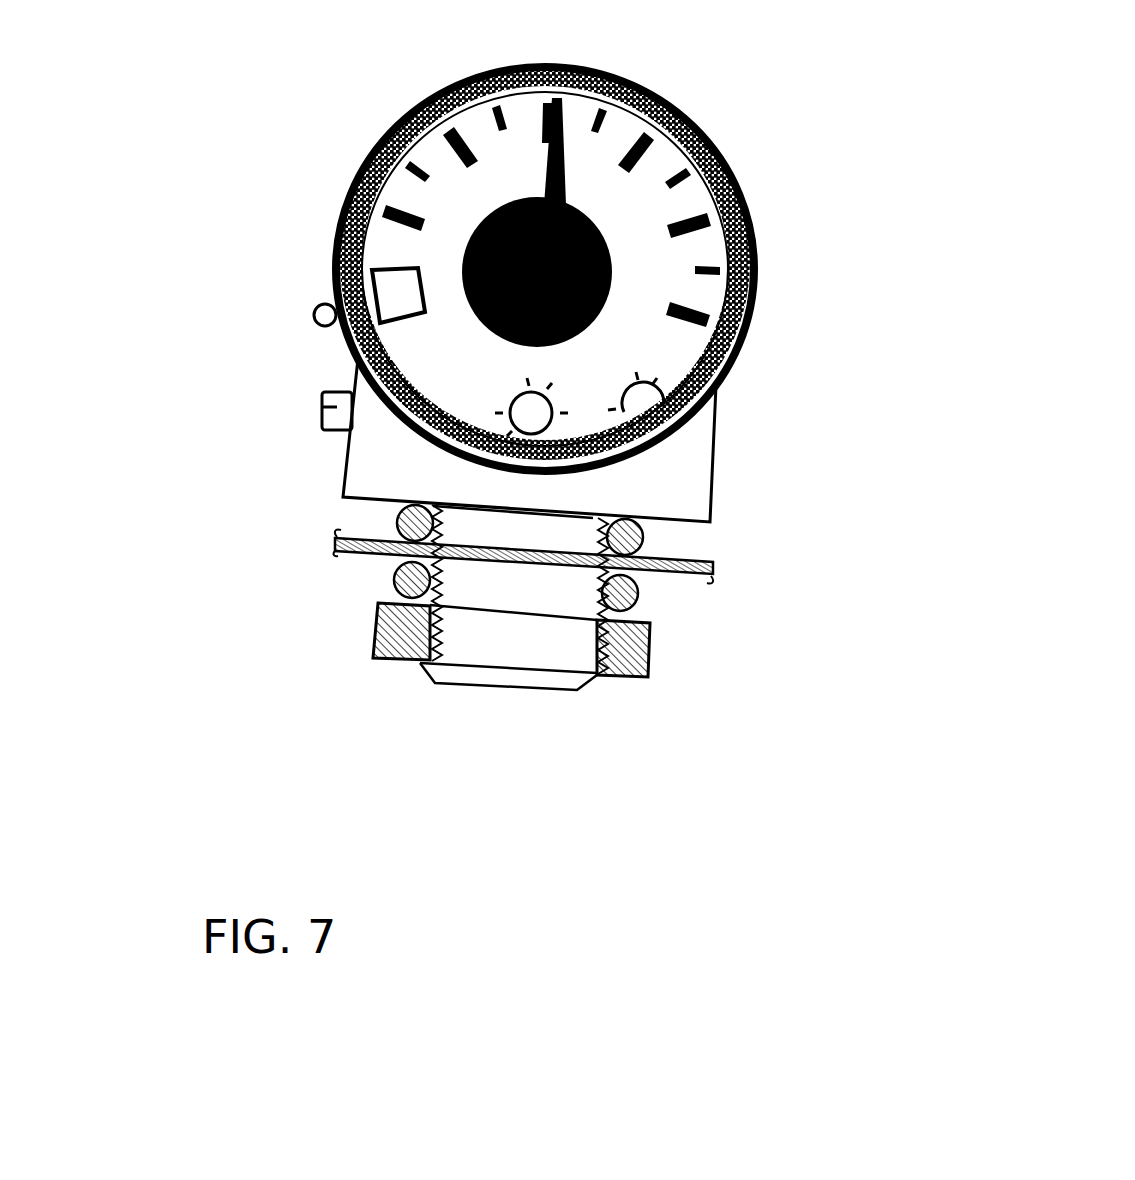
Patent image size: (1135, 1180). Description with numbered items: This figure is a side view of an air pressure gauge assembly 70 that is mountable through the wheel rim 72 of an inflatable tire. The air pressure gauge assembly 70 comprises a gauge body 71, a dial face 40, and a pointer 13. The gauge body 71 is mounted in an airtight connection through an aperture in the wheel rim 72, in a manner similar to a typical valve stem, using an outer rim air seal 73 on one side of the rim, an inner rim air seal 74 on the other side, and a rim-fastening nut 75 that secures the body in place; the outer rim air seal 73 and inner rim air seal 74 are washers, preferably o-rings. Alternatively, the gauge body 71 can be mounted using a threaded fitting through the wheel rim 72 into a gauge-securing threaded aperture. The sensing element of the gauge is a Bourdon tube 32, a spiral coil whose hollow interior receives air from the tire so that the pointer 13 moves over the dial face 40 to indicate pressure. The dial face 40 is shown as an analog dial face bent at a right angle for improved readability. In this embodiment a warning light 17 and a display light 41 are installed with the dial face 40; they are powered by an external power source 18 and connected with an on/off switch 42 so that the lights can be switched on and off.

The pointer 13 is at (590, 127).
The warning light 17 is at (537, 422).
The external power source 18 is at (322, 407).
The Bourdon tube 32 is at (620, 268).
The dial face 40 is at (388, 190).
The display light 41 is at (670, 415).
The on/off switch 42 is at (314, 314).
The air pressure gauge assembly 70 is at (286, 733).
The gauge body 71 is at (360, 443).
The wheel rim 72 is at (680, 573).
The outer rim air seal 73 is at (400, 520).
The inner rim air seal 74 is at (400, 585).
The rim-fastening nut 75 is at (647, 677).